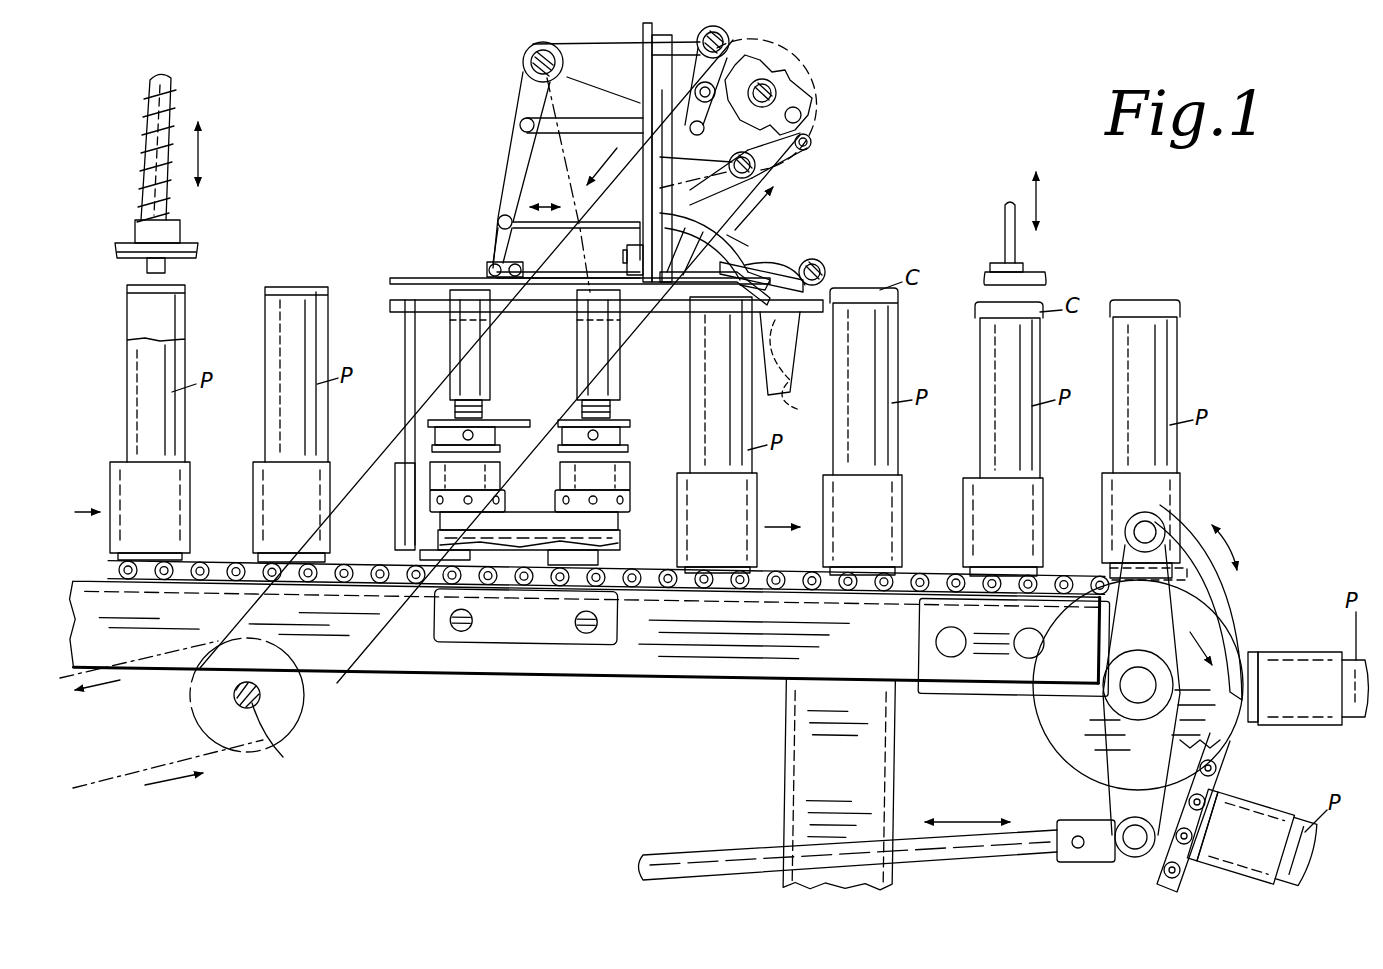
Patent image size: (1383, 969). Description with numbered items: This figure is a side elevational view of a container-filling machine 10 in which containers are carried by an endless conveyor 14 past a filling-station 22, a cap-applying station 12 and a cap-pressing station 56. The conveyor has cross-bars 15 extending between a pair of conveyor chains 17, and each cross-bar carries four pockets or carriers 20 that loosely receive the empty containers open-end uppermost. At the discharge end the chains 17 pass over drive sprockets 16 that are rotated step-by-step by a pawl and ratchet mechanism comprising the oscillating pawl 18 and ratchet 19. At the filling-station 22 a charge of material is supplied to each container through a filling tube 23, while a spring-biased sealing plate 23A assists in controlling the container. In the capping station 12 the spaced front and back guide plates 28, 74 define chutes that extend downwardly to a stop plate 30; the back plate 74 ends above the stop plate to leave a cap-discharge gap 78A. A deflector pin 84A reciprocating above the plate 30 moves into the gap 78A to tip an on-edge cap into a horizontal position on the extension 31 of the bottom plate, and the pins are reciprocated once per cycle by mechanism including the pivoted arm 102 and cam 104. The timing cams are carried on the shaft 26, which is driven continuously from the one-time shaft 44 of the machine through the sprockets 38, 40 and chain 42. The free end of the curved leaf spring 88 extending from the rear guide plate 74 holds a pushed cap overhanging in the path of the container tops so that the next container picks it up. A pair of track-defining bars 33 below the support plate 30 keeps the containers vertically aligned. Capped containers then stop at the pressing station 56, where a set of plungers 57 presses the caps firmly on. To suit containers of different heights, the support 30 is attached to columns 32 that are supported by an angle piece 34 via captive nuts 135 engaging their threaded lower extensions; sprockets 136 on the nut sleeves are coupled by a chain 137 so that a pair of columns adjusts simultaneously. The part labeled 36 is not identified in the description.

The container-filling machine 10 is at (903, 196).
The cap-applying station 12 is at (715, 256).
The endless conveyor 14 is at (608, 562).
The cross-bar 15 is at (253, 550).
The drive sprocket 16 is at (1215, 748).
The conveyor chain 17 is at (640, 573).
The oscillating pawl 18 is at (1228, 598).
The ratchet 19 is at (1052, 718).
The pocket or carrier 20 is at (188, 478).
The filling-station 22 is at (179, 146).
The filling tube 23 is at (165, 265).
The spring-biased sealing plate 23A is at (193, 240).
The shaft 26 is at (778, 87).
The front guide plate 28 is at (640, 30).
The stop plate 30 is at (397, 283).
The extension of the bottom plate 31 is at (690, 298).
The column 32 is at (580, 347).
The track-defining bar 33 is at (398, 307).
The angle piece 34 is at (533, 643).
The frame 36 is at (660, 672).
The sprocket 38 is at (293, 700).
The sprocket 40 is at (813, 73).
The chain 42 is at (327, 682).
The one-time shaft 44 is at (283, 757).
The cap-pressing station 56 is at (1034, 228).
The plunger 57 is at (1005, 232).
The back guide plate 74 is at (725, 35).
The cap-discharge gap 78A is at (690, 222).
The deflector pin 84A is at (593, 230).
The curved leaf spring 88 is at (770, 213).
The pivoted arm 102 is at (700, 68).
The cam 104 is at (745, 72).
The captive nut 135 is at (450, 493).
The sprocket 136 is at (488, 423).
The chain 137 is at (523, 420).